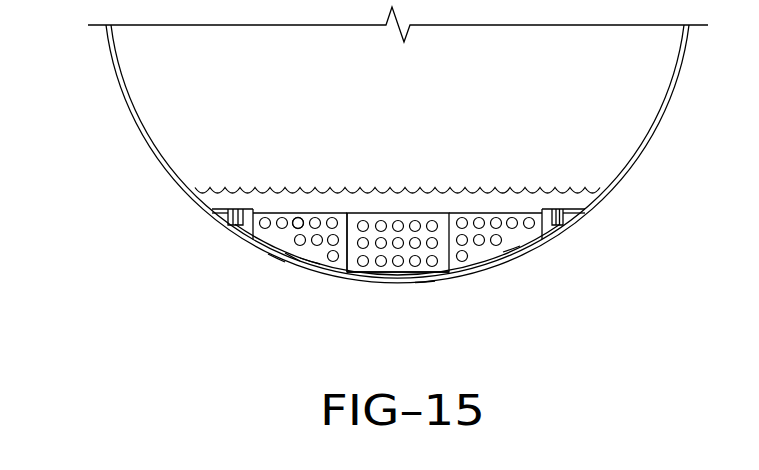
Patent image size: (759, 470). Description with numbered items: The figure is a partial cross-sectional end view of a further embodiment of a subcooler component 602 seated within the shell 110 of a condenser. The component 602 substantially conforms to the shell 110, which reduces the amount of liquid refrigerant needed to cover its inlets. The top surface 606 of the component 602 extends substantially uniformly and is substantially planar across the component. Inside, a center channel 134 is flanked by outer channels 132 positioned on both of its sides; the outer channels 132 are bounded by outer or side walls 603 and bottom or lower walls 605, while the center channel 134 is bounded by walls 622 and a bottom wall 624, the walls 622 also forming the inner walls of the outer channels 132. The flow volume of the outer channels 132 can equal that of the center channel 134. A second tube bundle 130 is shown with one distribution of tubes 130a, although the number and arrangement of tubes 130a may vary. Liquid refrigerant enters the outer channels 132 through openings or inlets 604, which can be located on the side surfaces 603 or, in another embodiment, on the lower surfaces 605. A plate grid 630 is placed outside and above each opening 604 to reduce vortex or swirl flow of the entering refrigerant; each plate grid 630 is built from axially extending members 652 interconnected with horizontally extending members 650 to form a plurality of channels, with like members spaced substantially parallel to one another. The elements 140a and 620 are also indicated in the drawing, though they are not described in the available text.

The shell 110 is at (121, 88).
The second tube bundle 130 is at (311, 248).
The tubes 130a is at (302, 221).
The outer channels 132 is at (274, 257).
The center channel 134 is at (425, 280).
The outlet 140a is at (558, 227).
The subcooler component 602 is at (478, 260).
The side surfaces 603 is at (254, 214).
The openings 604 is at (540, 228).
The lower surfaces 605 is at (503, 253).
The top surface 606 is at (403, 217).
The gasket 620 is at (292, 253).
The walls 622 is at (356, 217).
The bottom wall 624 is at (398, 274).
The plate grid 630 is at (228, 214).
The horizontally extending members 650 is at (583, 212).
The axially extending members 652 is at (243, 240).